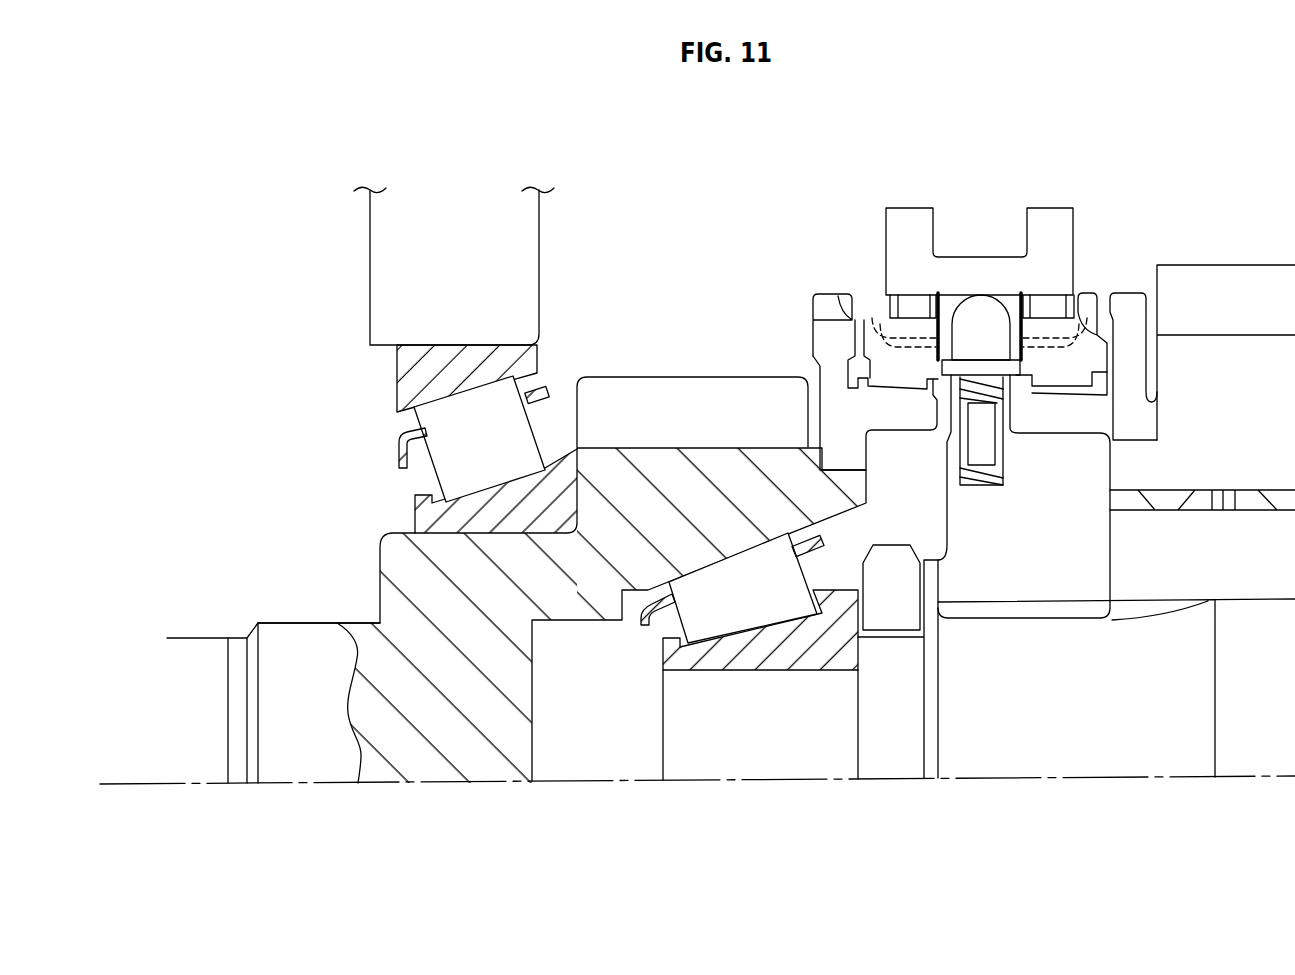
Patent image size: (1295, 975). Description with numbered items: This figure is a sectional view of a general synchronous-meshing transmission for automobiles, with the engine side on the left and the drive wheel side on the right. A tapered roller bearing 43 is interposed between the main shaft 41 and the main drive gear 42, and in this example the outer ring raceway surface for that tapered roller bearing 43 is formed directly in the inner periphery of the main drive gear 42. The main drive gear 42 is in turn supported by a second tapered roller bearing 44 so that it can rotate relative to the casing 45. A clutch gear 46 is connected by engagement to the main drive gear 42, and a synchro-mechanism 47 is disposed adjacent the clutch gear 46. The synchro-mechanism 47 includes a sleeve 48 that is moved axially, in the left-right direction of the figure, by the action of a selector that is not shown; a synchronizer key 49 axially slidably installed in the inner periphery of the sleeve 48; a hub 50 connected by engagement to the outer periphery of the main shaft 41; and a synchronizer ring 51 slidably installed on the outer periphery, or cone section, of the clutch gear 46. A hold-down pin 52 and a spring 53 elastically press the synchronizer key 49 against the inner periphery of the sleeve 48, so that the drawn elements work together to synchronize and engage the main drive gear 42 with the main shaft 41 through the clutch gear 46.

The main shaft 41 is at (1195, 697).
The main drive gear 42 is at (652, 456).
The tapered roller bearing 43 is at (630, 648).
The tapered roller bearing 44 is at (380, 469).
The casing 45 is at (516, 248).
The clutch gear 46 is at (828, 333).
The synchro-mechanism 47 is at (1034, 322).
The sleeve 48 is at (1047, 224).
The synchronizer key 49 is at (1055, 328).
The hub 50 is at (1090, 549).
The synchronizer ring 51 is at (875, 330).
The hold-down pin 52 is at (987, 342).
The spring 53 is at (987, 390).